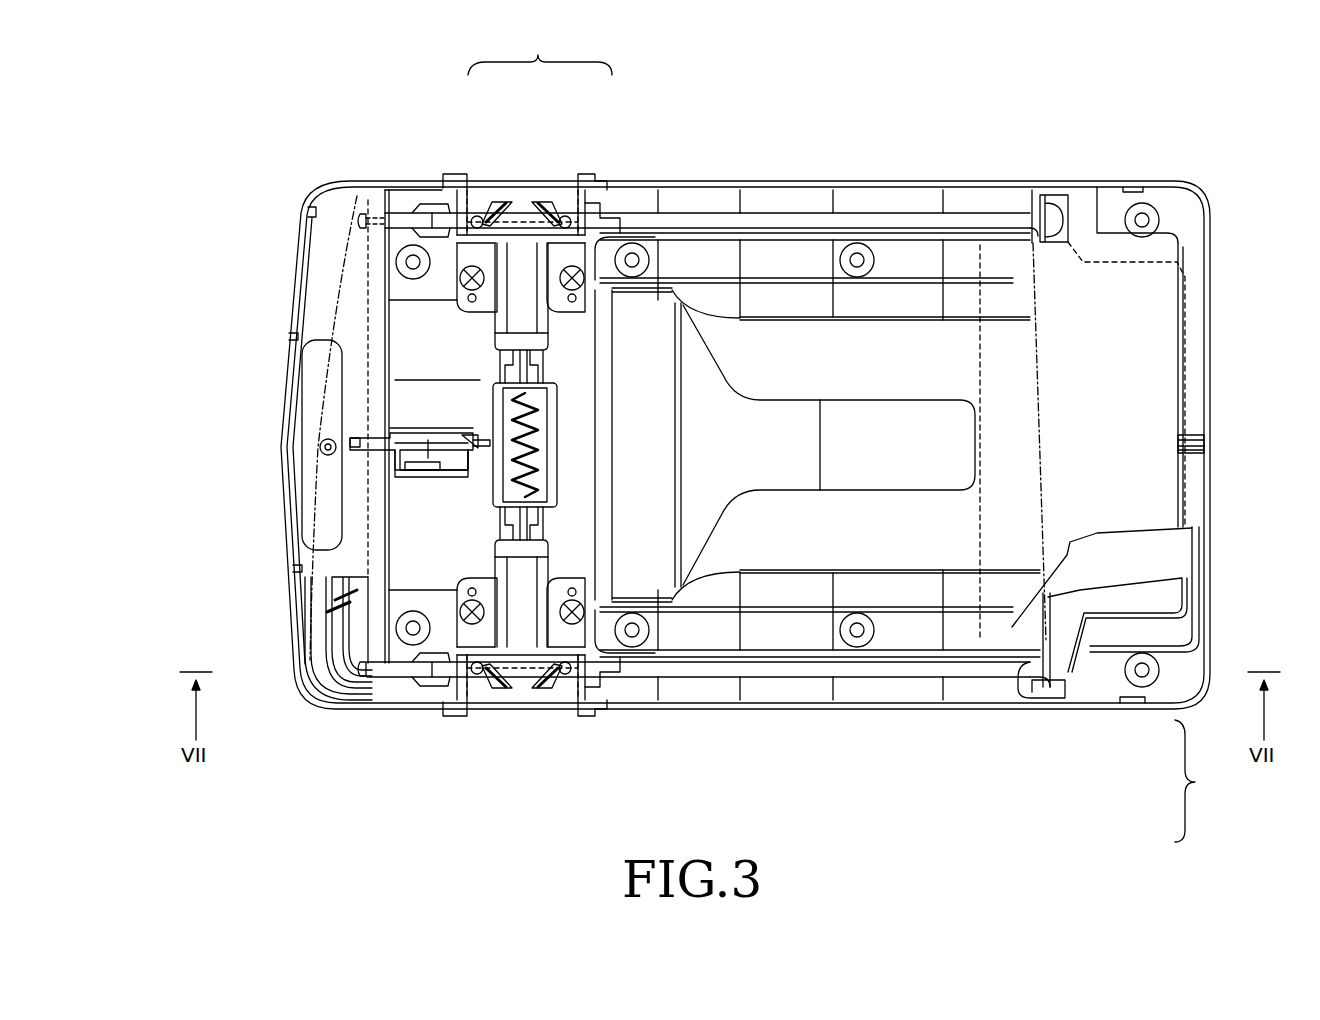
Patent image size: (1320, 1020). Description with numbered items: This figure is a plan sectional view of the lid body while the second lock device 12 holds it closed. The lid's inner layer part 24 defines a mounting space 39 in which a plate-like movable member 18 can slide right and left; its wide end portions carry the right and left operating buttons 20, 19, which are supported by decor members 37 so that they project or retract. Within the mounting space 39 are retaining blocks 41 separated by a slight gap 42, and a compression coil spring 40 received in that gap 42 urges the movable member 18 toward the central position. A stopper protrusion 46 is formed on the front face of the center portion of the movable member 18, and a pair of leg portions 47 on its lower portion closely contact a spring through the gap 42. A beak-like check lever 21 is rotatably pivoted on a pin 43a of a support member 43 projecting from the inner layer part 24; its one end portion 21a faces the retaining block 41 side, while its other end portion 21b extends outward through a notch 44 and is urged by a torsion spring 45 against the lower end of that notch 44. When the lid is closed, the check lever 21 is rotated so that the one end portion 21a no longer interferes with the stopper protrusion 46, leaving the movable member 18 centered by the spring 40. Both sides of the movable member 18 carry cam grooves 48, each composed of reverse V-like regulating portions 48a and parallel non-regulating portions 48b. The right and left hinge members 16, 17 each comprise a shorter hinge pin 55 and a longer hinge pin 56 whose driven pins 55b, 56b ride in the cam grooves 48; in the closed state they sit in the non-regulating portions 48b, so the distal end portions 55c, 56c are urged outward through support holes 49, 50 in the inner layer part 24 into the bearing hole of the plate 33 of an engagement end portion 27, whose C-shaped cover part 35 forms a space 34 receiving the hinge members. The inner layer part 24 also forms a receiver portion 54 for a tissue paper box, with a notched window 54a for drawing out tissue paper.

The second lock device 12 is at (352, 313).
The hinge member 16 is at (866, 207).
The hinge member 17 is at (766, 680).
The movable member 18 is at (488, 325).
The operating button 19 is at (570, 187).
The operating button 20 is at (515, 700).
The check lever 21 is at (460, 437).
The one end portion 21a is at (482, 437).
The other end portion 21b is at (440, 468).
The inner layer part 24 is at (1110, 375).
The engagement end portion 27 is at (1206, 781).
The plate 33 is at (1055, 690).
The space 34 is at (1032, 590).
The cover part 35 is at (1062, 215).
The decor member 37 is at (605, 208).
The mounting space 39 is at (400, 518).
The compression coil spring 40 is at (557, 460).
The retaining block 41 is at (557, 408).
The gap 42 is at (505, 358).
The support member 43 is at (410, 378).
The pin 43a is at (387, 428).
The notch 44 is at (320, 447).
The torsion spring 45 is at (425, 477).
The stopper protrusion 46 is at (478, 462).
The leg portion 47 is at (555, 368).
The cam groove 48 is at (540, 50).
The regulating portion 48a is at (552, 188).
The non-regulating portion 48b is at (525, 188).
The support hole 49 is at (358, 222).
The support hole 50 is at (1045, 212).
The receiver portion 54 is at (823, 445).
The notched window 54a is at (848, 487).
The hinge pin 55 is at (405, 210).
The driven pin 55b is at (470, 230).
The distal end portion 55c is at (358, 215).
The hinge pin 56 is at (724, 214).
The driven pin 56b is at (588, 200).
The distal end portion 56c is at (1057, 235).